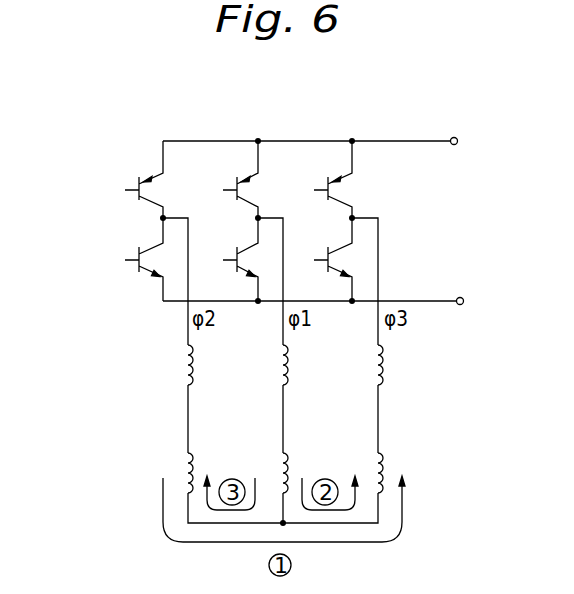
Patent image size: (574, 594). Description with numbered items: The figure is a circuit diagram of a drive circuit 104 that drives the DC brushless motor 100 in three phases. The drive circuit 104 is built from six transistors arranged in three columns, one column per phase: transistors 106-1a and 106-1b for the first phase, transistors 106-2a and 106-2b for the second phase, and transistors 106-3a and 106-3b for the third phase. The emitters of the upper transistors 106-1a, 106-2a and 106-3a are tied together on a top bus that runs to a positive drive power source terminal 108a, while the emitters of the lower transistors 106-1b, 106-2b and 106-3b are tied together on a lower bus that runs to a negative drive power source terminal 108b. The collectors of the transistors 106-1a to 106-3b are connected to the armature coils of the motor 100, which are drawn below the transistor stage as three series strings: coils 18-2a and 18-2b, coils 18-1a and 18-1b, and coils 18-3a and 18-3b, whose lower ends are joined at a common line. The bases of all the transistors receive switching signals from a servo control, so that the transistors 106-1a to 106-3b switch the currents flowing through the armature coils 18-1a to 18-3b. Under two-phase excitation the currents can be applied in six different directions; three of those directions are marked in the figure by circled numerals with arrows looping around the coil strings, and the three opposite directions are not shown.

The inverter / switching circuit 104 is at (408, 219).
The DC brushless motor 100 is at (410, 419).
The positive drive power source terminal 108a is at (454, 137).
The negative drive power source terminal 108b is at (460, 305).
The transistor 106-1a is at (227, 190).
The transistor 106-1b is at (233, 262).
The transistor 106-2a is at (133, 189).
The transistor 106-2b is at (130, 263).
The transistor 106-3a is at (316, 188).
The transistor 106-3b is at (325, 261).
The armature coil 18-1a is at (278, 369).
The armature coil 18-1b is at (278, 462).
The armature coil 18-2a is at (185, 368).
The armature coil 18-2b is at (184, 462).
The armature coil 18-3a is at (374, 370).
The armature coil 18-3b is at (374, 462).